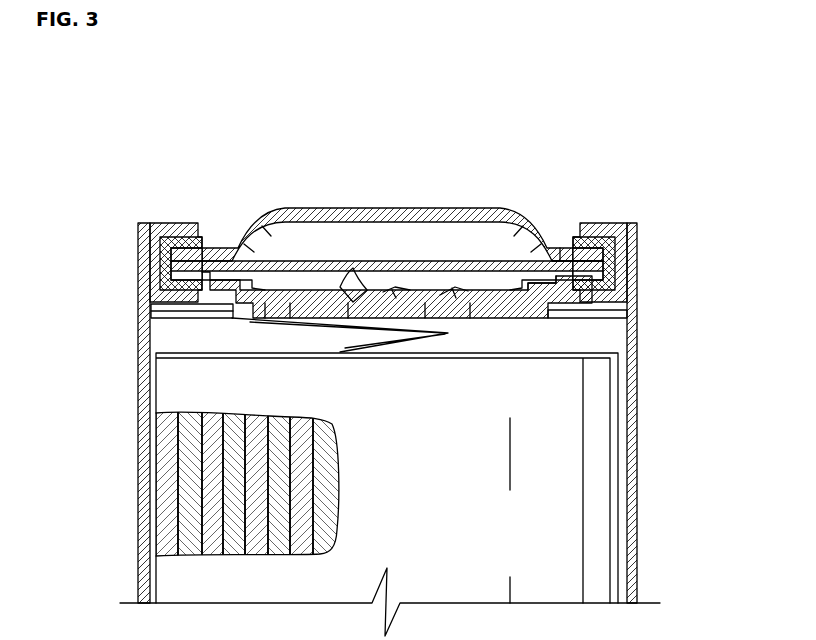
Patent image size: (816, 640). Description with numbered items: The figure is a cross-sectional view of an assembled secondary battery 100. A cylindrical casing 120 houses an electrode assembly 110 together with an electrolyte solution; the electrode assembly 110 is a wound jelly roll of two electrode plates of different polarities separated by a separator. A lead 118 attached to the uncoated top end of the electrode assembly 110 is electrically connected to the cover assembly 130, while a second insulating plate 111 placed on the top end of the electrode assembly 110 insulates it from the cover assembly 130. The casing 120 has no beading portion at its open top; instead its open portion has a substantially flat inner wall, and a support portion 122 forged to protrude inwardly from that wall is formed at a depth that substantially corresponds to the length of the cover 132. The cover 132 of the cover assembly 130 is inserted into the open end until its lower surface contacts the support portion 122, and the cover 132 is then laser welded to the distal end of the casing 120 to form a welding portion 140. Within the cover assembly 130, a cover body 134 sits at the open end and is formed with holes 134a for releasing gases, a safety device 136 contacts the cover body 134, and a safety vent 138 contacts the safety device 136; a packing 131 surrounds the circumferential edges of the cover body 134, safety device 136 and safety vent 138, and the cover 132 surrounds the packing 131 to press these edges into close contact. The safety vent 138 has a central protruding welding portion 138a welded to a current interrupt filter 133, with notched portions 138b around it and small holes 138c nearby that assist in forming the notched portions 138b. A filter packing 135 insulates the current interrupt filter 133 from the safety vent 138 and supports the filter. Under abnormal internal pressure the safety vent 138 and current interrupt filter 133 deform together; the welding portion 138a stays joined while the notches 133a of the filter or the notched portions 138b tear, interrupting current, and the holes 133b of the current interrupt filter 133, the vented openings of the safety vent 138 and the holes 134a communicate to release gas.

The secondary battery 100 is at (100, 170).
The electrode assembly 110 is at (158, 413).
The second insulating plate 111 is at (566, 354).
The lead 118 is at (440, 332).
The casing 120 is at (131, 297).
The support portion 122 is at (148, 311).
The cover assembly 130 is at (178, 186).
The packing 131 is at (586, 238).
The cover 132 is at (184, 225).
The current interrupt filter 133 is at (538, 307).
The notches 133a is at (347, 312).
The holes 133b is at (498, 317).
The cover body 134 is at (348, 209).
The holes 134a is at (526, 240).
The filter packing 135 is at (545, 297).
The safety device 136 is at (553, 267).
The safety vent 138 is at (597, 277).
The welding portion 138a is at (391, 297).
The notched portions 138b is at (357, 276).
The small holes 138c is at (433, 310).
The welding portion 140 is at (147, 224).